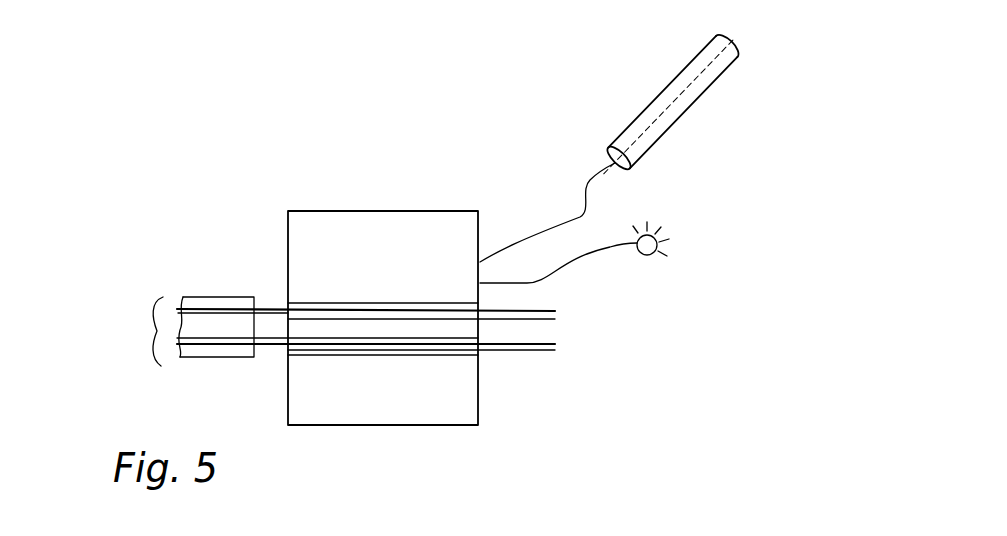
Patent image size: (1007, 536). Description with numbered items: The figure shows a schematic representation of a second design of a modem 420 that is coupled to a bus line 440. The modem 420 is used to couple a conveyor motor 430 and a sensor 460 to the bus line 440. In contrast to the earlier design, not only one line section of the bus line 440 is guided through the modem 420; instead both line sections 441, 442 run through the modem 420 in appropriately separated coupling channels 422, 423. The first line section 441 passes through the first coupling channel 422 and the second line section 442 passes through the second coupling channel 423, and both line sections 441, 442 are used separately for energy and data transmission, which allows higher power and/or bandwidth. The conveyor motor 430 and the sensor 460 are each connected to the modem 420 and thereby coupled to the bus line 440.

The modem 420 is at (322, 222).
The coupling channel 422 is at (442, 303).
The coupling channel 423 is at (443, 355).
The conveyor motor 430 is at (648, 112).
The bus line 440 is at (157, 333).
The line section 441 is at (224, 312).
The line section 442 is at (222, 349).
The sensor 460 is at (657, 252).